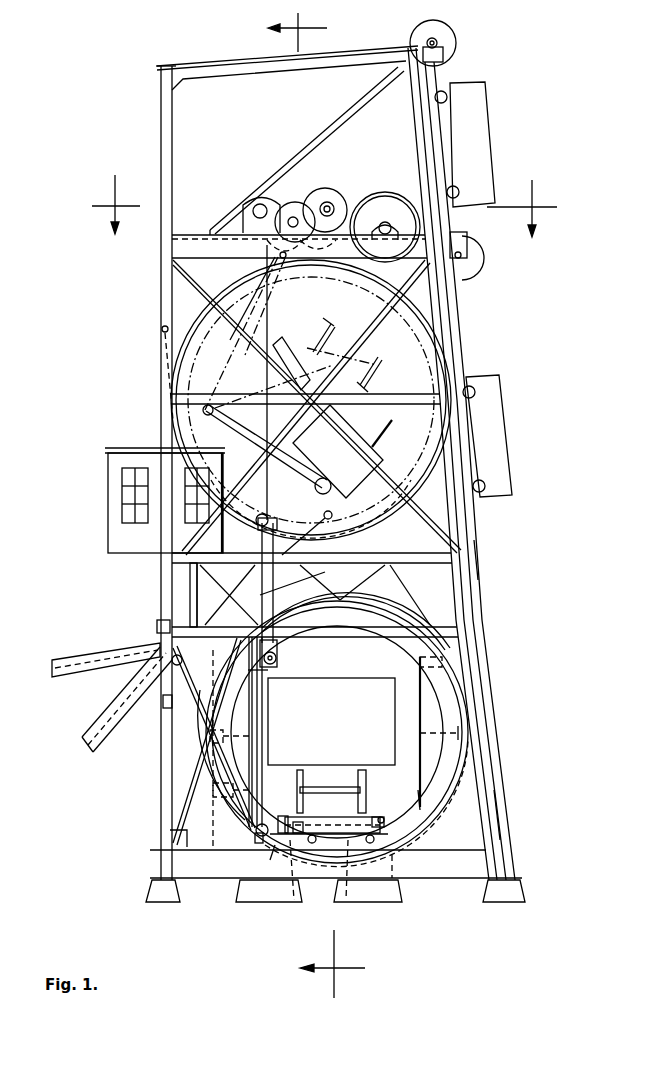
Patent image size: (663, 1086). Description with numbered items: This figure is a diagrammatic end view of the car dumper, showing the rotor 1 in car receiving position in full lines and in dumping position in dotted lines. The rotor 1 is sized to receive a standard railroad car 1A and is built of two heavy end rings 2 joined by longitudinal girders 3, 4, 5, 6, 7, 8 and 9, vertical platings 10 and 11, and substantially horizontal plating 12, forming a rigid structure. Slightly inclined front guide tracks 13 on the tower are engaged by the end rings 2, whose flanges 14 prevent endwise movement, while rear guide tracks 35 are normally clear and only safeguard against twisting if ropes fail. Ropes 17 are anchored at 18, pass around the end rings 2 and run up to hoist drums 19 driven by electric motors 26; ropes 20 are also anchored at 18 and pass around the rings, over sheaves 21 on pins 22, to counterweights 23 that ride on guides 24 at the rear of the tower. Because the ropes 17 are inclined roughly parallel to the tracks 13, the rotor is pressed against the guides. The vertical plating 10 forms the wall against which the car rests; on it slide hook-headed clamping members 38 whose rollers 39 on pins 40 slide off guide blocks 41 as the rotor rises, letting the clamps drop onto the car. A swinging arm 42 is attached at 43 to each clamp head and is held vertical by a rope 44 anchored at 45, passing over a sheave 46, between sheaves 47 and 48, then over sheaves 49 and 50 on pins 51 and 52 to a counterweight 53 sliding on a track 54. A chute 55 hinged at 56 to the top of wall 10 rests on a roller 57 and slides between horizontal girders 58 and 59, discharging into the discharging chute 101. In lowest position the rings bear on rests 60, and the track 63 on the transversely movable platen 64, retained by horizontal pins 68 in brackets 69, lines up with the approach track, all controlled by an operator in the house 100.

The rotor 1 is at (372, 612).
The railroad car 1A is at (345, 680).
The end rings 2 is at (448, 772).
The longitudinal girder 3 is at (232, 680).
The longitudinal girder 4 is at (210, 738).
The longitudinal girder 5 is at (213, 790).
The longitudinal girder 6 is at (296, 885).
The longitudinal girder 7 is at (352, 885).
The longitudinal girder 8 is at (462, 733).
The longitudinal girder 9 is at (445, 672).
The vertical plating 10 is at (283, 776).
The vertical plating 11 is at (420, 775).
The horizontal plating 12 is at (405, 820).
The front guide tracks 13 is at (190, 597).
The flanges 14 is at (430, 838).
The ropes 17 is at (418, 292).
The anchor 18 is at (162, 330).
The hoist drums 19 is at (380, 192).
The ropes 20 is at (412, 113).
The sheaves 21 is at (420, 35).
The pins 22 is at (438, 42).
The counterweights 23 is at (480, 113).
The guides 24 is at (452, 226).
The electric motors 26 is at (268, 195).
The rear guide tracks 35 is at (478, 806).
The clamping members 38 is at (270, 671).
The rollers 39 is at (255, 840).
The pins 40 is at (255, 830).
The guide blocks 41 is at (275, 847).
The swinging arm 42 is at (300, 460).
The attachment point 43 is at (280, 661).
The ropes 44 is at (300, 368).
The anchor point 45 is at (263, 735).
The sheave 46 is at (278, 655).
The sheave 47 is at (262, 528).
The sheave 48 is at (275, 518).
The sheave 49 is at (278, 262).
The sheave 50 is at (476, 272).
The pin 51 is at (280, 255).
The pin 52 is at (468, 252).
The counterweight 53 is at (510, 434).
The track 54 is at (478, 556).
The chute 55 is at (318, 534).
The hinge 56 is at (290, 612).
The roller 57 is at (178, 666).
The horizontal girder 58 is at (157, 626).
The horizontal girder 59 is at (172, 702).
The rests 60 is at (395, 862).
The track 63 is at (366, 806).
The platen 64 is at (326, 817).
The horizontal pins 68 is at (296, 820).
The brackets 69 is at (280, 820).
The house 100 is at (108, 478).
The discharging chute 101 is at (93, 746).